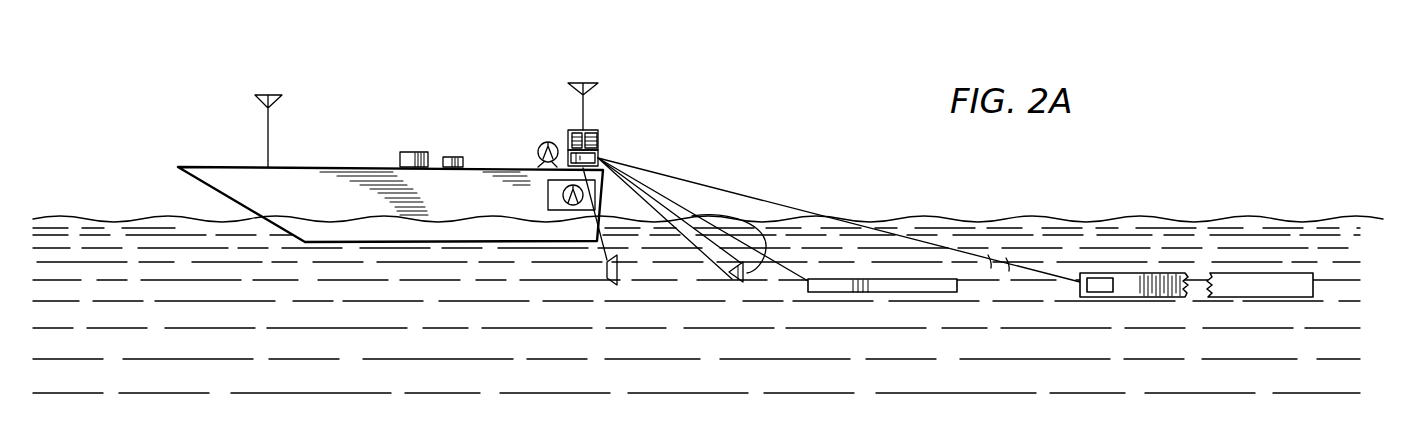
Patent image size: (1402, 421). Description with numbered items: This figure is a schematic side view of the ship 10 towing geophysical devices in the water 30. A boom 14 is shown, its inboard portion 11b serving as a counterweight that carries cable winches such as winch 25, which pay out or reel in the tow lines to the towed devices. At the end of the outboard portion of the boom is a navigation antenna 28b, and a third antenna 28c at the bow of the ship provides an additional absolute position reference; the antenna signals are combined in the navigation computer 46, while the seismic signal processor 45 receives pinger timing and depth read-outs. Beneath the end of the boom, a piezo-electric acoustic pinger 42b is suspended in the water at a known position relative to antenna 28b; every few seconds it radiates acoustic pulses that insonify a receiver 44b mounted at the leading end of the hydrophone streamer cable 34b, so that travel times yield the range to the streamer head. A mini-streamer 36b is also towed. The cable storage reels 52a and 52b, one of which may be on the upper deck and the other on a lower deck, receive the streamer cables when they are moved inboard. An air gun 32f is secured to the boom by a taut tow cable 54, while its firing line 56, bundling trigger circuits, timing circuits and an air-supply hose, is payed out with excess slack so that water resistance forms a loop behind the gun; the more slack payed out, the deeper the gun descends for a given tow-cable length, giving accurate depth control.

The ship 10 is at (297, 205).
The inboard portion of boom 11b is at (583, 113).
The boom 14 is at (598, 153).
The cable winch 25 is at (598, 132).
The antenna 28b is at (593, 82).
The antenna 28c is at (260, 95).
The water 30 is at (133, 237).
The air gun 32f is at (733, 282).
The hydrophone streamer cable 34b is at (955, 243).
The mini-streamer 36b is at (898, 287).
The acoustic device (pinger) 42b is at (606, 284).
The receiver 44b is at (1097, 292).
The seismic signal processor 45 is at (410, 152).
The navigation computer 46 is at (455, 157).
The cable storage reel 52a is at (541, 146).
The cable storage reel 52b is at (564, 193).
The tow cable 54 is at (710, 262).
The firing line 56 is at (757, 270).